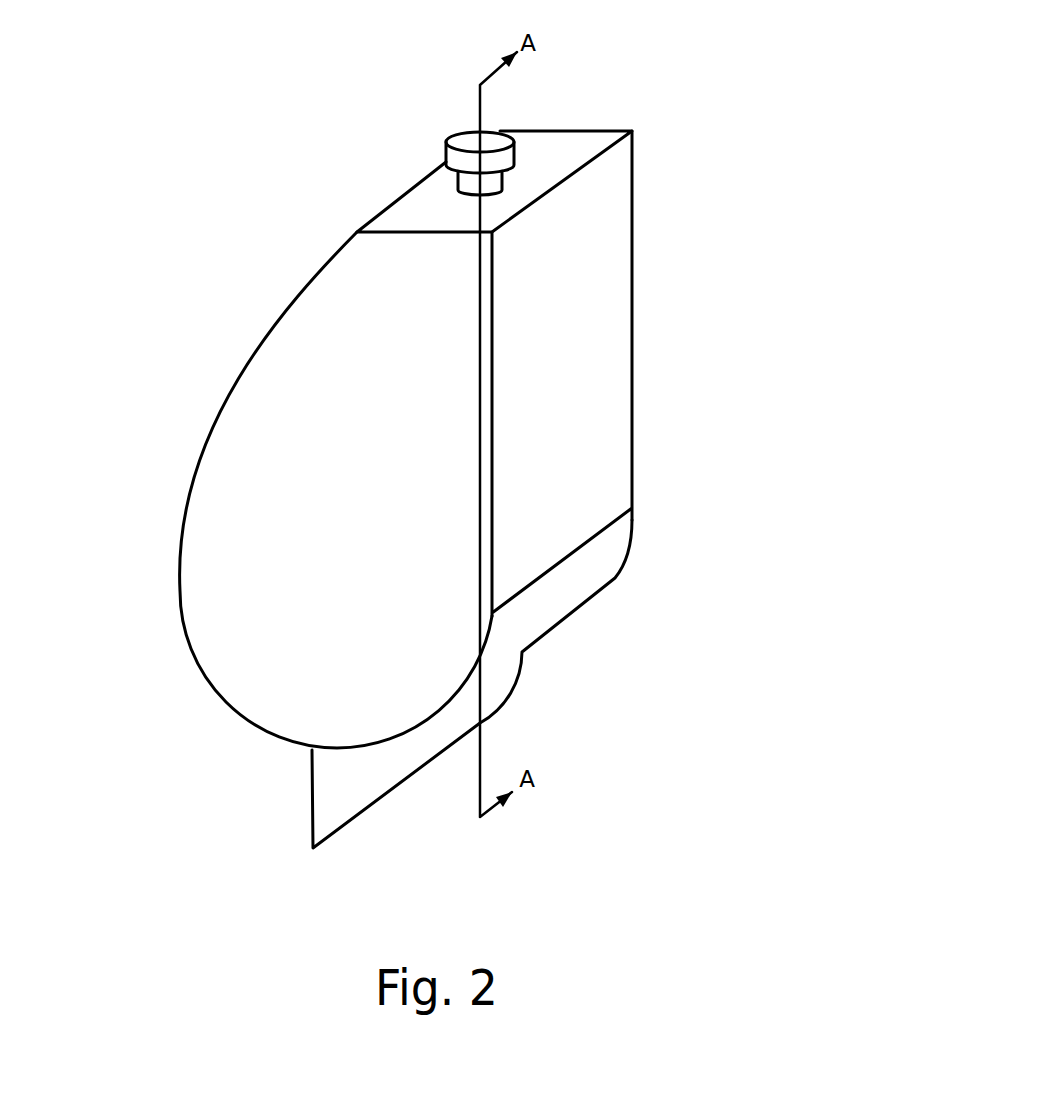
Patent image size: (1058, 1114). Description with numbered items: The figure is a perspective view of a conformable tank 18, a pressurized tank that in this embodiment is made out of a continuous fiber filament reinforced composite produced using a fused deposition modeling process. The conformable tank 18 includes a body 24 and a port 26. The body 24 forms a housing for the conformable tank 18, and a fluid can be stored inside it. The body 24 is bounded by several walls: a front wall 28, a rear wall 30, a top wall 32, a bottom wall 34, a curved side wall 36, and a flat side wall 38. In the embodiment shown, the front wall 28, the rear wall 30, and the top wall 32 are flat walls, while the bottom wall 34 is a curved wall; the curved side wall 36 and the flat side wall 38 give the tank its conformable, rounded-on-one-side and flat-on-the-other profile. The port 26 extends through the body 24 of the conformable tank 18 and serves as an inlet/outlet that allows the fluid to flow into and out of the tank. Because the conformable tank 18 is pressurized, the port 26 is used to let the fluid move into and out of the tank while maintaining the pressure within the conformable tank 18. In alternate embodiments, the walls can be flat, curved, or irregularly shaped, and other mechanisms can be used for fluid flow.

The conformable tank 18 is at (473, 451).
The body 24 is at (277, 245).
The port 26 is at (492, 142).
The front wall 28 is at (238, 603).
The rear wall 30 is at (635, 255).
The top wall 32 is at (580, 147).
The bottom wall 34 is at (463, 701).
The curved side wall 36 is at (213, 412).
The flat side wall 38 is at (576, 398).